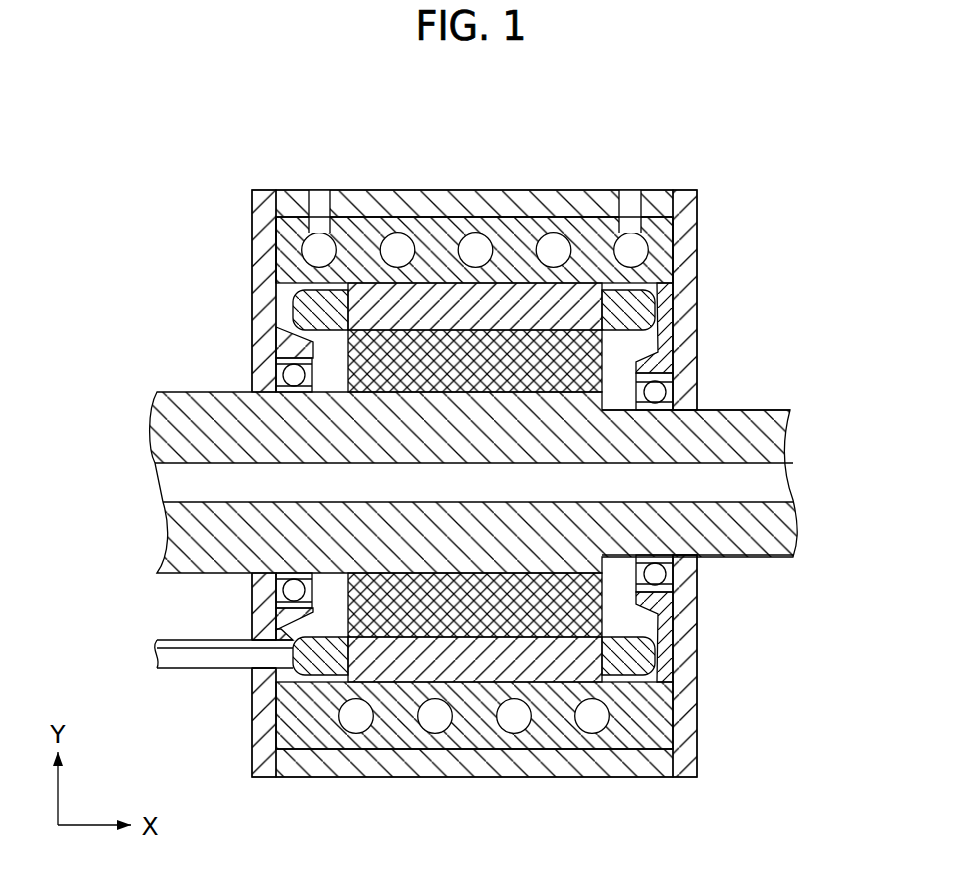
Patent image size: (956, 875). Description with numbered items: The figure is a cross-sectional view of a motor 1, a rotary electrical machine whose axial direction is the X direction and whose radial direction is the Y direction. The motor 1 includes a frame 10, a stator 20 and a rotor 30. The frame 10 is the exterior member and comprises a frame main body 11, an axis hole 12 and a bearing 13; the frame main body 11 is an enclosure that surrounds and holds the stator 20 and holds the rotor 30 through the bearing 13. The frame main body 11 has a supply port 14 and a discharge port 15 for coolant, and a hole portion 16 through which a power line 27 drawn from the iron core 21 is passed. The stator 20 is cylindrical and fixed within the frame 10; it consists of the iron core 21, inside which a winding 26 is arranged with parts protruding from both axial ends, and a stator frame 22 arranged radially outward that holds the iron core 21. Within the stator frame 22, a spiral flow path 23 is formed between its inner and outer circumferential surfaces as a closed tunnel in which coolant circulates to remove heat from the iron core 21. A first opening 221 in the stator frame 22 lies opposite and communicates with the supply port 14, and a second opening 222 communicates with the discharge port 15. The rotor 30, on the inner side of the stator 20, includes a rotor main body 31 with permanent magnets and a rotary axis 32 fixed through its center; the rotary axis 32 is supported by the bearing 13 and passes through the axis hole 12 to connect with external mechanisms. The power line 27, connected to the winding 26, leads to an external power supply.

The motor 1 is at (481, 431).
The frame 10 is at (467, 456).
The frame main body 11 is at (660, 190).
The axis hole 12 is at (481, 471).
The bearing 13 is at (278, 349).
The supply port 14 is at (630, 188).
The discharge port 15 is at (320, 188).
The hole portion 16 is at (248, 636).
The stator 20 is at (289, 291).
The iron core 21 is at (502, 290).
The stator frame 22 is at (467, 471).
The flow path 23 is at (394, 247).
The winding 26 is at (657, 322).
The power line 27 is at (183, 670).
The rotor 30 is at (608, 364).
The rotor main body 31 is at (590, 617).
The rotary axis 32 is at (763, 410).
The first opening 221 is at (670, 225).
The second opening 222 is at (300, 232).